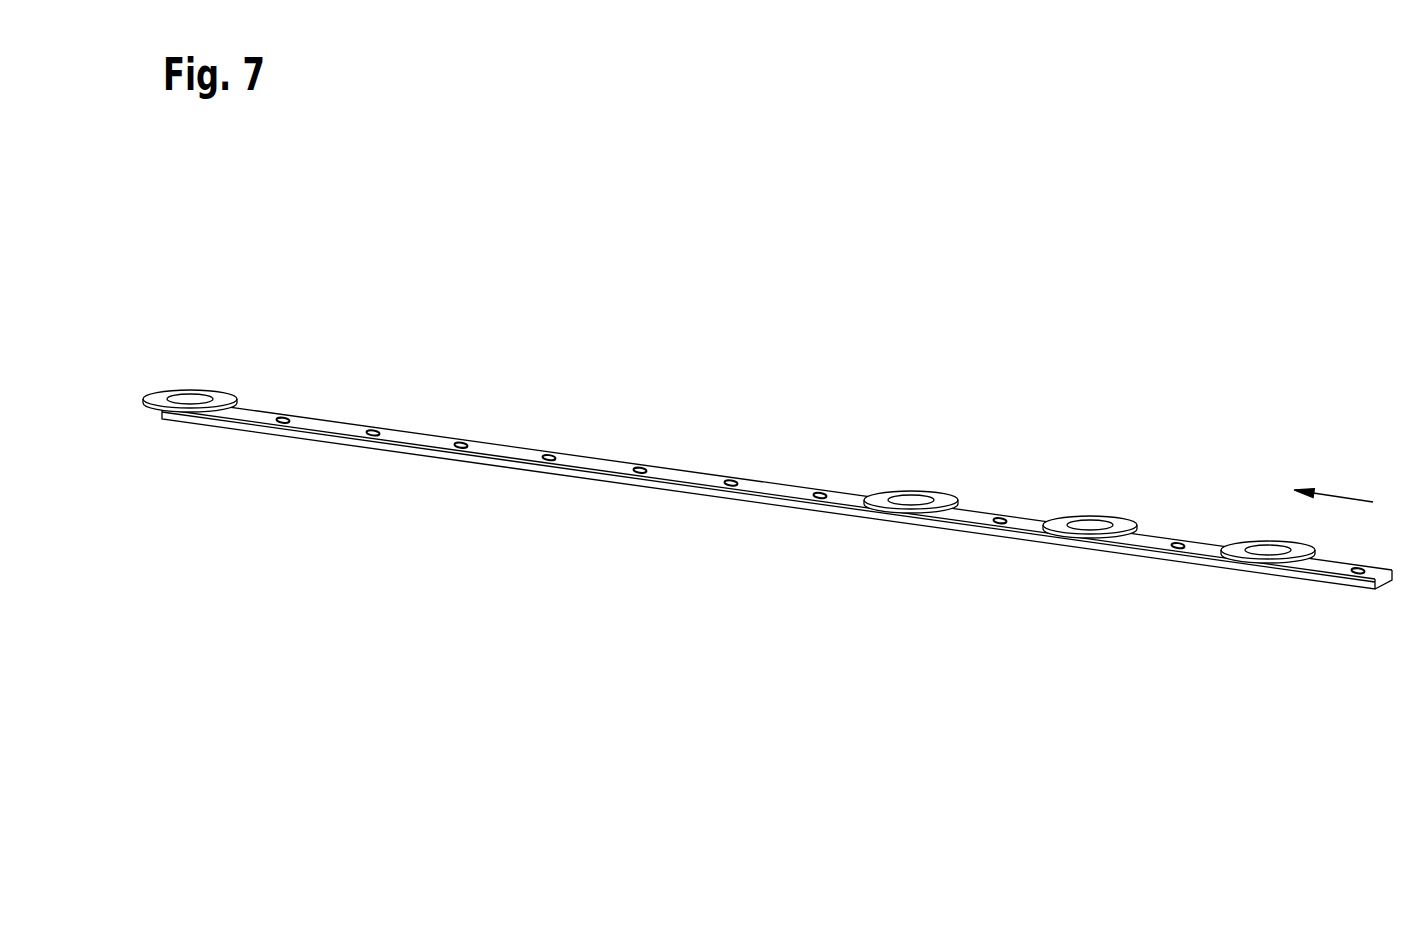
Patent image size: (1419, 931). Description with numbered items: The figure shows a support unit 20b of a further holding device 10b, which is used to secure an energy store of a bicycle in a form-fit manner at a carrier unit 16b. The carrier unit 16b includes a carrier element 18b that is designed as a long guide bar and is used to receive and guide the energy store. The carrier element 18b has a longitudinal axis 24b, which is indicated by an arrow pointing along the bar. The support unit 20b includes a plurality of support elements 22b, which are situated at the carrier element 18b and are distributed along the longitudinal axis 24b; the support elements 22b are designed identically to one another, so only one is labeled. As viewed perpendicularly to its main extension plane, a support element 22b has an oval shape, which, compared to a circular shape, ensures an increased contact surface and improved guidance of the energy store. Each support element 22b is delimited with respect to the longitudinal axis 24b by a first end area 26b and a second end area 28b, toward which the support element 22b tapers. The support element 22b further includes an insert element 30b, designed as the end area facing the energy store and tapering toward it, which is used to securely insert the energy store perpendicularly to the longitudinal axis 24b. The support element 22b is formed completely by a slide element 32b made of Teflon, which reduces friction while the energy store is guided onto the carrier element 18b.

The holding device 10b is at (502, 637).
The carrier unit 16b is at (720, 650).
The carrier element 18b is at (687, 478).
The support unit 20b is at (595, 653).
The support element 22b is at (1087, 525).
The longitudinal axis 24b is at (1343, 497).
The first end area 26b is at (1028, 534).
The second end area 28b is at (1145, 535).
The insert element 30b is at (1085, 539).
The slide element 32b is at (1090, 525).